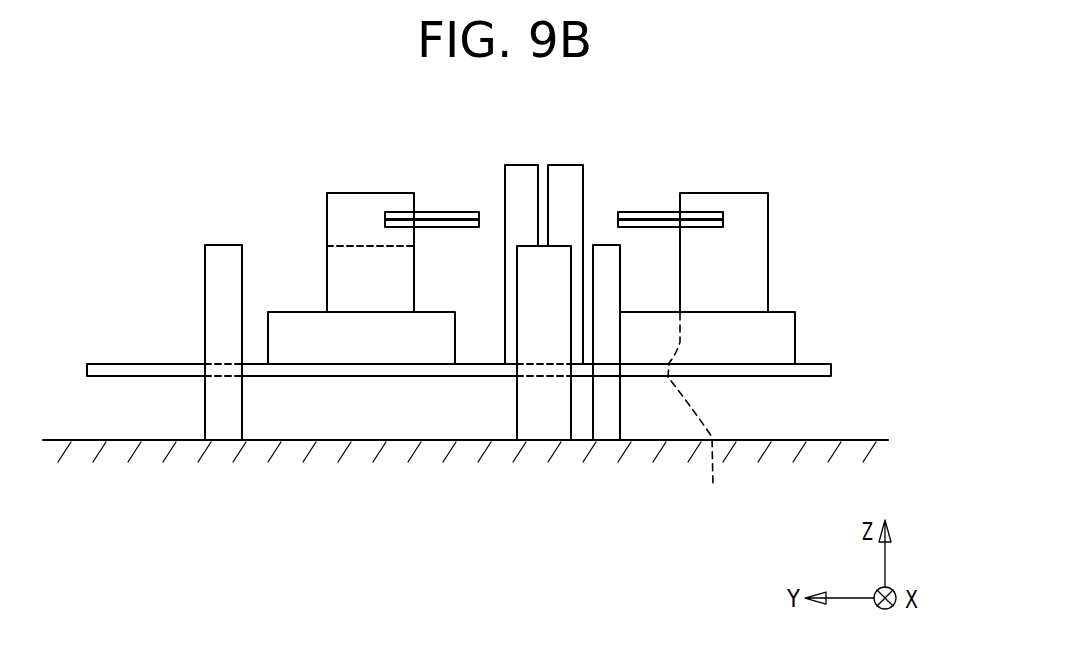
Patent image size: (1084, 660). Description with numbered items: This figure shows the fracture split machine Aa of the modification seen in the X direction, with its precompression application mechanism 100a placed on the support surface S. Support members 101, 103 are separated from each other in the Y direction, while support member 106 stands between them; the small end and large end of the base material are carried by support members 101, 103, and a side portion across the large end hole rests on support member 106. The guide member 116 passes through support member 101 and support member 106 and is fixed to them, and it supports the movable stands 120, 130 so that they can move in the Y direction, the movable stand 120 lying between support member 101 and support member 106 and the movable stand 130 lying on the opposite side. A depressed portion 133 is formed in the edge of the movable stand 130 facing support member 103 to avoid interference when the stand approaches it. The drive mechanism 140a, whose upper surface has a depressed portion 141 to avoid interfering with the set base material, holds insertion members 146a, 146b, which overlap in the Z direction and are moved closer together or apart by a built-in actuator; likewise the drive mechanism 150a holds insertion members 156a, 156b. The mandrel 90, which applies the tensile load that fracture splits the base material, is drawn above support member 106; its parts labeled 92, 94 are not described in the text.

The support surface S is at (65, 438).
The guide member 116 is at (122, 375).
The support member 101 is at (222, 262).
The support member 103 is at (620, 416).
The support member 106 is at (525, 408).
The movable stand 120 is at (298, 326).
The movable stand 130 is at (758, 327).
The depressed portion 133 is at (700, 416).
The drive mechanism 140a is at (330, 199).
The depressed portion 141 is at (356, 246).
The insertion member 146a is at (440, 212).
The insertion member 146b is at (450, 228).
The drive mechanism 150a is at (745, 205).
The insertion member 156a is at (648, 212).
The insertion member 156b is at (648, 228).
The mandrel 90 is at (544, 221).
The first pillar 92 is at (527, 176).
The second pillar 94 is at (569, 176).
The precompression application mechanism 100a is at (840, 350).
The fracture split machine Aa is at (837, 159).